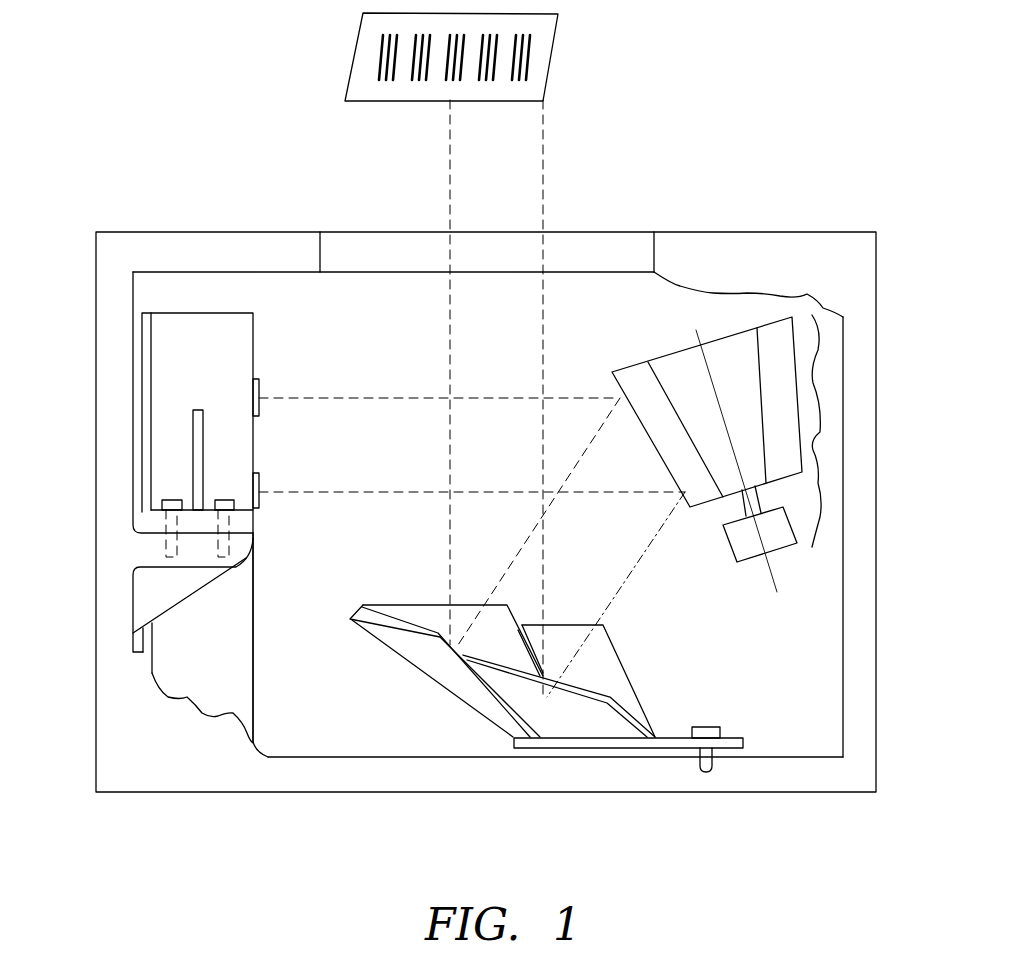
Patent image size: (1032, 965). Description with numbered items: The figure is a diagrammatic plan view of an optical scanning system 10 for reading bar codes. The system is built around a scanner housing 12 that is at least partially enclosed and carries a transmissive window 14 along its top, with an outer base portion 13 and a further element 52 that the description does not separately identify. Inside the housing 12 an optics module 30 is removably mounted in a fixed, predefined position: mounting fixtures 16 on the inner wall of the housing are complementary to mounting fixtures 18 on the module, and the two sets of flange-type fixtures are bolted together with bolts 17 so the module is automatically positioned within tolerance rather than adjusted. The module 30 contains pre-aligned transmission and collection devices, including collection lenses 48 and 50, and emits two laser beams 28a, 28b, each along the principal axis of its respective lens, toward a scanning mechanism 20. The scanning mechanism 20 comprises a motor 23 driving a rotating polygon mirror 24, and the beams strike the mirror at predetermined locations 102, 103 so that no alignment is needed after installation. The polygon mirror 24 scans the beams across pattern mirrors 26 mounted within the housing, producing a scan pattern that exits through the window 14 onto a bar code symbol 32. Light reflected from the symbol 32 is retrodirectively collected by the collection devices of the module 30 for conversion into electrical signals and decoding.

The optical scanning system 10 is at (728, 118).
The scanner housing 12 is at (862, 278).
The base 13 is at (325, 728).
The transmissive window 14 is at (604, 231).
The mounting fixtures 16 is at (147, 548).
The bolts 17 is at (170, 498).
The mounting fixtures 18 is at (153, 522).
The scanning mechanism 20 is at (774, 455).
The motor 23 is at (757, 570).
The rotating polygon mirror 24 is at (720, 358).
The pattern mirrors 26 is at (587, 722).
The laser beam 28a is at (366, 495).
The laser beam 28b is at (366, 397).
The optics module 30 is at (177, 386).
The bar code symbol 32 is at (552, 58).
The collection lens 48 is at (260, 500).
The collection lens 50 is at (260, 388).
The module housing 52 is at (147, 338).
The predetermined location 102 is at (620, 397).
The predetermined location 103 is at (676, 493).